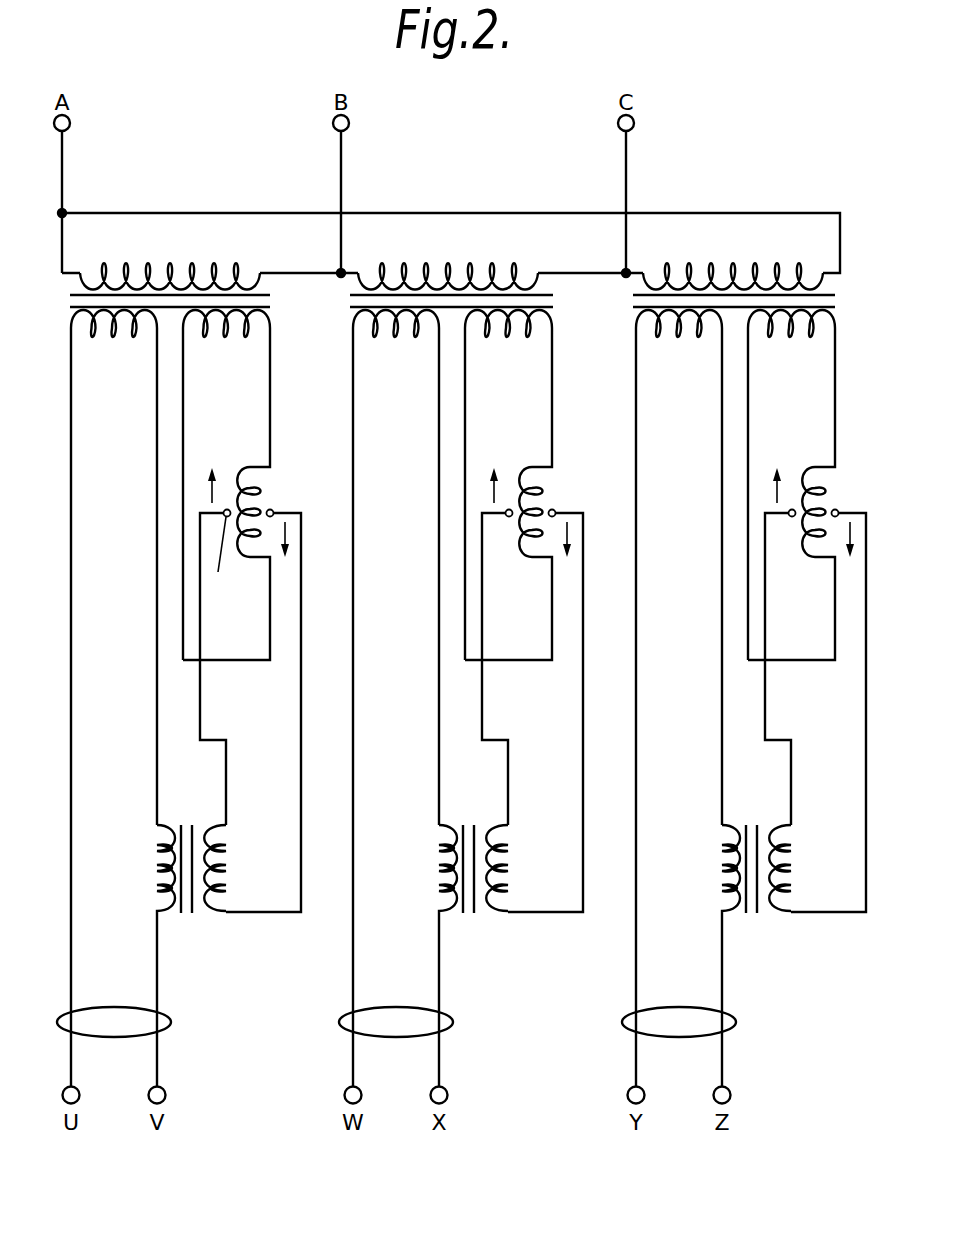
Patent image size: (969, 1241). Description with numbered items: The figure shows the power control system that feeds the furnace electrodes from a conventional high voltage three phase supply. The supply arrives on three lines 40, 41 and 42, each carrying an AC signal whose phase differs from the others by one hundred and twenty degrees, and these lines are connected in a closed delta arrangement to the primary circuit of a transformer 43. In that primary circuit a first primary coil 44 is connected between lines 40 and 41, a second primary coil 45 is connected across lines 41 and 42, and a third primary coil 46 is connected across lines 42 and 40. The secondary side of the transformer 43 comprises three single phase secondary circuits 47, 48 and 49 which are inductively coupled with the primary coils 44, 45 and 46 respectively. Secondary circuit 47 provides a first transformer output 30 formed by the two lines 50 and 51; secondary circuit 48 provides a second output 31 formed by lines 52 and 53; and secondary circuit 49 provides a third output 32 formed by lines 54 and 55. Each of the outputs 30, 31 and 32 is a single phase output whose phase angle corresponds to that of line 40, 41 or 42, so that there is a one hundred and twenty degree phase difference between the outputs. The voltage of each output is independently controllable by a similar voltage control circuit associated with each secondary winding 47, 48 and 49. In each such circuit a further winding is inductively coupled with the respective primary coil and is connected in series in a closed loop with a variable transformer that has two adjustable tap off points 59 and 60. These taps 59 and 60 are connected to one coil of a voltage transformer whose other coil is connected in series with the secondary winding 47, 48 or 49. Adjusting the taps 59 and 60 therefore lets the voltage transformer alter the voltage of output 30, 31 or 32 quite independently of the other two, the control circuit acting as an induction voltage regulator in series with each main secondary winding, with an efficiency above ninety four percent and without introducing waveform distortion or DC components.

The first transformer output 30 is at (167, 1015).
The second transformer output 31 is at (421, 999).
The third transformer output 32 is at (704, 999).
The line 40 is at (62, 169).
The line 41 is at (342, 169).
The line 42 is at (627, 169).
The transformer 43 is at (421, 248).
The primary coil 44 is at (155, 268).
The second primary coil 45 is at (450, 267).
The third primary coil 46 is at (715, 268).
The secondary circuit 47 is at (113, 337).
The secondary circuit 48 is at (396, 356).
The secondary circuit 49 is at (679, 356).
The line 50 is at (71, 1070).
The line 51 is at (157, 1070).
The line 52 is at (382, 1070).
The line 53 is at (468, 1070).
The line 54 is at (665, 1070).
The line 55 is at (751, 1070).
The adjustable tap off point 59 is at (228, 559).
The adjustable tap off point 60 is at (274, 511).